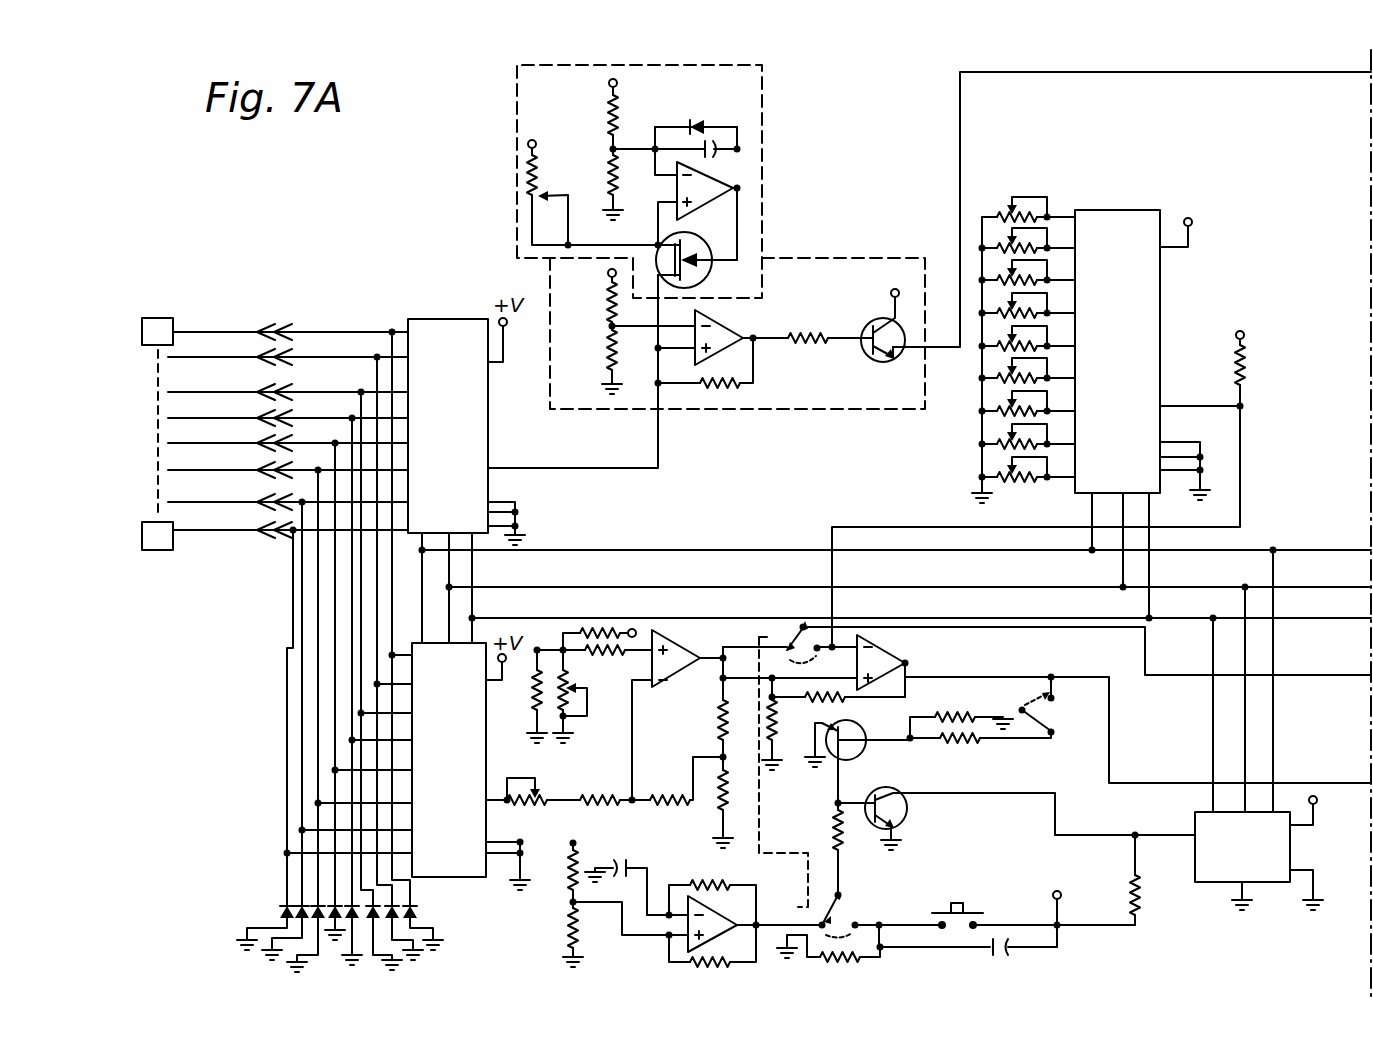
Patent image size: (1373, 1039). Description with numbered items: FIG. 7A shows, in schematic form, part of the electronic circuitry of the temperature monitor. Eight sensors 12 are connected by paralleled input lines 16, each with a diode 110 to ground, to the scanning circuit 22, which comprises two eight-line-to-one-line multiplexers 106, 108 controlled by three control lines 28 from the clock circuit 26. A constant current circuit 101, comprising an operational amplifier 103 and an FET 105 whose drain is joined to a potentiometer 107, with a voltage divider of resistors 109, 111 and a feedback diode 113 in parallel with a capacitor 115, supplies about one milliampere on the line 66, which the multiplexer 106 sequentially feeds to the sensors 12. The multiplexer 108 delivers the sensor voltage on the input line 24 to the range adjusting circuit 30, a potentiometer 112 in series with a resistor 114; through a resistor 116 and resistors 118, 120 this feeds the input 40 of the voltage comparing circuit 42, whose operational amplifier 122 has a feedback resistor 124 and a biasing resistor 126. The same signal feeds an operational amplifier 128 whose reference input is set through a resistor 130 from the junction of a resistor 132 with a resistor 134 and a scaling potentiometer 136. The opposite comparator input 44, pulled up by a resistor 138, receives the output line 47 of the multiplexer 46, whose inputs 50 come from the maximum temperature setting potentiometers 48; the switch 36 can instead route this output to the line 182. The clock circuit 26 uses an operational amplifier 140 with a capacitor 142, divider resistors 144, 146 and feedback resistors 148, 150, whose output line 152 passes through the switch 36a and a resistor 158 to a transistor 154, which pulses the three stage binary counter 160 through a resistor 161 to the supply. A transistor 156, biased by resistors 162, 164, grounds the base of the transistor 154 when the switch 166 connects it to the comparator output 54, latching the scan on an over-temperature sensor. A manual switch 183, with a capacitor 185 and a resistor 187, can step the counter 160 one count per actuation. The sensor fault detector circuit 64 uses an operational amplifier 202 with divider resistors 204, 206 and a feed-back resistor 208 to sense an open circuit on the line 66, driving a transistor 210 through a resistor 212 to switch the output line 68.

The sensors 12 is at (165, 302).
The input lines 16 is at (248, 278).
The sensor multiplexing or scanning circuit 22 is at (441, 300).
The input line 24 is at (495, 798).
The clock circuit 26 is at (835, 815).
The multiplexer control lines 28 is at (592, 520).
The range adjusting circuit 30 is at (590, 786).
The switch 36 is at (787, 644).
The switch 36a is at (881, 913).
The input 40 is at (862, 698).
The voltage comparing circuit 42 is at (910, 681).
The input 44 is at (857, 635).
The multiplexer 46 is at (1142, 345).
The output line 47 is at (1243, 474).
The potentiometers 48 is at (1035, 160).
The inputs 50 is at (1060, 211).
The output 54 is at (985, 655).
The sensor fault detector circuit 64 is at (820, 252).
The input line 66 is at (612, 473).
The output line 68 is at (1138, 50).
The constant current circuit 101 is at (763, 172).
The operational amplifier 103 is at (698, 193).
The FET 105 is at (691, 259).
The multiplexer 106 is at (448, 426).
The potentiometer 107 is at (590, 181).
The multiplexer 108 is at (449, 760).
The resistor 109 is at (635, 110).
The diodes 110 is at (278, 910).
The resistor 111 is at (633, 184).
The potentiometer 112 is at (518, 803).
The diode 113 is at (696, 111).
The resistor 114 is at (591, 811).
The capacitor 115 is at (690, 207).
The resistor 116 is at (676, 781).
The resistor 118 is at (702, 735).
The resistor 120 is at (716, 805).
The operational amplifier 122 is at (880, 660).
The feedback resistor 124 is at (837, 696).
The biasing resistor 126 is at (789, 724).
The operational amplifier 128 is at (679, 708).
The resistor 130 is at (593, 661).
The resistor 132 is at (641, 613).
The resistor 134 is at (521, 696).
The scaling potentiometer 136 is at (593, 696).
The resistor 138 is at (1244, 370).
The operational amplifier 140 is at (697, 921).
The capacitor 142 is at (636, 877).
The resistor 144 is at (558, 864).
The resistor 146 is at (555, 937).
The feedback resistor 148 is at (712, 890).
The feedback resistor 150 is at (692, 970).
The line 152 is at (813, 900).
The transistor 154 is at (893, 790).
The transistor 156 is at (857, 760).
The resistor 158 is at (862, 851).
The three stage binary counter 160 is at (1273, 849).
The resistor 161 is at (1155, 880).
The resistor 162 is at (960, 711).
The resistor 164 is at (982, 750).
The switch 166 is at (1060, 704).
The line 182 is at (1343, 655).
The switch 183 is at (1000, 880).
The capacitor 185 is at (967, 955).
The resistor 187 is at (828, 960).
The operational amplifier 202 is at (700, 331).
The resistor 204 is at (592, 296).
The resistor 206 is at (595, 359).
The feed-back resistor 208 is at (704, 374).
The transistor 210 is at (884, 328).
The resistor 212 is at (830, 325).